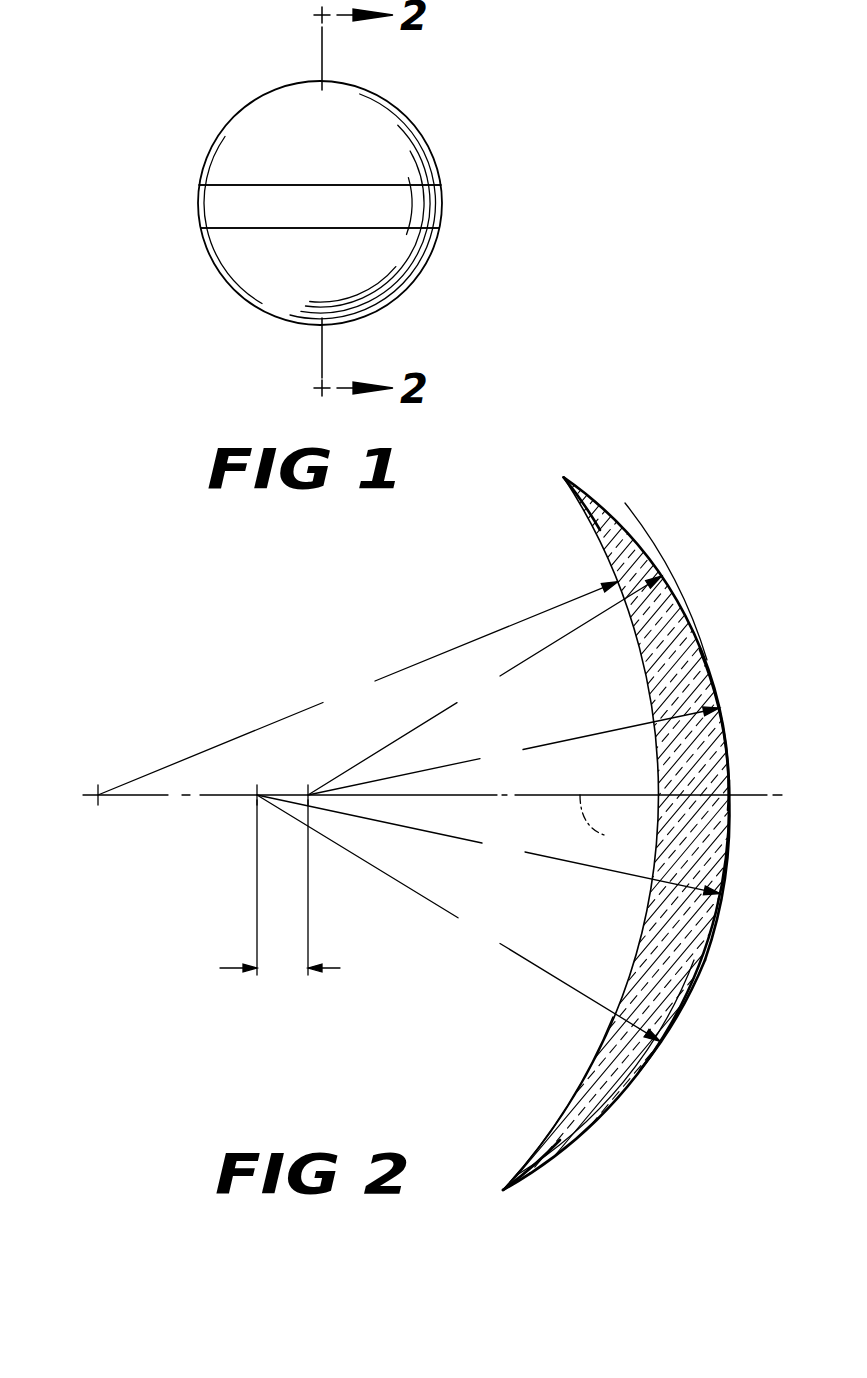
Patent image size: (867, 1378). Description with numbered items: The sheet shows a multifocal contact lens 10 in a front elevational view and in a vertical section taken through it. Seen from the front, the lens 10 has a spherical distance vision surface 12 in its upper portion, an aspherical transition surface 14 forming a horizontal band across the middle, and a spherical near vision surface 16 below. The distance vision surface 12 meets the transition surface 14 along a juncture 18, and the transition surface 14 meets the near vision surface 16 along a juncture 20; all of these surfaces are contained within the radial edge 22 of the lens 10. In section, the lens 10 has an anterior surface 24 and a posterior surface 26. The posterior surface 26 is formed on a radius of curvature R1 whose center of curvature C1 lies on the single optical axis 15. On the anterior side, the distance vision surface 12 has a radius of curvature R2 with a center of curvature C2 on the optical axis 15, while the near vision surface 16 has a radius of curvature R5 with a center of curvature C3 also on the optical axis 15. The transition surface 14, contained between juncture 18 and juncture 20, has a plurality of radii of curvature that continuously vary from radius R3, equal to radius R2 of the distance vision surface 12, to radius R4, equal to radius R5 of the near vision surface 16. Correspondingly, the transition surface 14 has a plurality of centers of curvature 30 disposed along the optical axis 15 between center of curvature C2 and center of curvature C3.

In FIG. 1, the multifocal contact lens 10 is at (215, 93).
In FIG. 2, the multifocal contact lens 10 is at (699, 476).
In FIG. 1, the distance vision surface 12 is at (336, 162).
In FIG. 2, the distance vision surface 12 is at (677, 594).
In FIG. 1, the transition surface 14 is at (336, 222).
In FIG. 2, the transition surface 14 is at (729, 806).
In FIG. 1, the near vision surface 16 is at (336, 282).
In FIG. 2, the near vision surface 16 is at (693, 970).
In FIG. 1, the juncture 18 is at (410, 183).
In FIG. 2, the juncture 18 is at (714, 707).
In FIG. 1, the juncture 20 is at (410, 230).
In FIG. 2, the juncture 20 is at (708, 890).
In FIG. 1, the radial edge 22 is at (400, 300).
In FIG. 2, the radial edge 22 is at (563, 476).
In FIG. 2, the anterior surface 24 is at (627, 1090).
In FIG. 2, the posterior surface 26 is at (563, 1110).
In FIG. 2, the single optical axis 15 is at (606, 824).
In FIG. 2, the centers of curvature 30 is at (280, 893).
In FIG. 2, the center of curvature C1 is at (98, 790).
In FIG. 2, the center of curvature C2 is at (308, 790).
In FIG. 2, the center of curvature C3 is at (257, 797).
In FIG. 2, the radius of curvature R1 is at (358, 688).
In FIG. 2, the radius of curvature R2 is at (485, 685).
In FIG. 2, the radius of curvature R3 is at (513, 751).
In FIG. 2, the radius of curvature R4 is at (488, 845).
In FIG. 2, the radius of curvature R5 is at (458, 918).